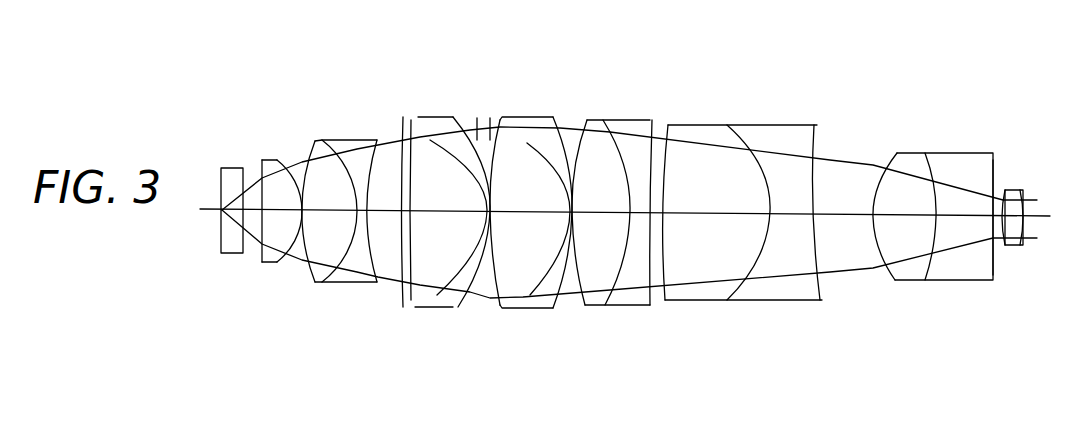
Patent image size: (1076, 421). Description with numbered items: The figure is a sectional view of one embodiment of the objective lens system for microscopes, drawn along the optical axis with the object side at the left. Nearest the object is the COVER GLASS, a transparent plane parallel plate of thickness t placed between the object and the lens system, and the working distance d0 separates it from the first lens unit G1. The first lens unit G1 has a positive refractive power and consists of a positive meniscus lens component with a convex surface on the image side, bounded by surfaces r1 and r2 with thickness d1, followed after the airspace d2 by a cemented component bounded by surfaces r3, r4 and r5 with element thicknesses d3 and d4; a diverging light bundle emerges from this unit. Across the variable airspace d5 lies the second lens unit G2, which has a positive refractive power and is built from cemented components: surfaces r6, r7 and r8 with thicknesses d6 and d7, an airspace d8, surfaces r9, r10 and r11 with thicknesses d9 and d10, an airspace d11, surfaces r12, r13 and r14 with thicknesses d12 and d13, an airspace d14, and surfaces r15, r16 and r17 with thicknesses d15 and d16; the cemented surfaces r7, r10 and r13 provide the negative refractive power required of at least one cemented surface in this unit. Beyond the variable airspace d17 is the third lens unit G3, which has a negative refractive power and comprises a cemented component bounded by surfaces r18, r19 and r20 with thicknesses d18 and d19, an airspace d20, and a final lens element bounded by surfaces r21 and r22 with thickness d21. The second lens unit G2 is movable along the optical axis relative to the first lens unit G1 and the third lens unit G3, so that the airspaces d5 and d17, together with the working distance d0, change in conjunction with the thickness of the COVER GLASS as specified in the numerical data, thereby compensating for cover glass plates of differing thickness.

The first lens unit G1 is at (310, 141).
The second lens unit G2 is at (614, 155).
The third lens unit G3 is at (962, 142).
The cover glass plate COVER GLASS is at (222, 237).
The radius of curvature of first surface r1 is at (262, 160).
The radius of curvature of second surface r2 is at (279, 160).
The radius of curvature of third surface r3 is at (313, 141).
The radius of curvature of fourth surface r4 is at (334, 140).
The radius of curvature of fifth surface r5 is at (380, 163).
The radius of curvature of sixth surface r6 is at (401, 135).
The radius of curvature of seventh surface r7 is at (434, 117).
The radius of curvature of eighth surface r8 is at (478, 118).
The radius of curvature of ninth surface r9 is at (490, 118).
The radius of curvature of tenth surface r10 is at (525, 118).
The radius of curvature of eleventh surface r11 is at (559, 118).
The radius of curvature of twelfth surface r12 is at (582, 118).
The radius of curvature of thirteenth surface r13 is at (620, 118).
The radius of curvature of fourteenth surface r14 is at (643, 118).
The radius of curvature of fifteenth surface r15 is at (663, 118).
The radius of curvature of sixteenth surface r16 is at (752, 125).
The radius of curvature of seventeenth surface r17 is at (812, 174).
The radius of curvature of eighteenth surface r18 is at (885, 150).
The radius of curvature of nineteenth surface r19 is at (930, 153).
The radius of curvature of twentieth surface r20 is at (985, 165).
The radius of curvature of twenty-first surface r21 is at (1006, 190).
The radius of curvature of twenty-second surface r22 is at (1038, 154).
The working distance d0 is at (249, 255).
The thickness of first lens element d1 is at (270, 262).
The airspace between first and second lens elements d2 is at (298, 262).
The thickness of second lens element d3 is at (338, 262).
The thickness of third lens element d4 is at (355, 285).
The variable airspace between first and second lens units d5 is at (392, 285).
The thickness of fourth lens element d6 is at (434, 308).
The thickness of fifth lens element d7 is at (462, 270).
The airspace between fifth and sixth lens elements d8 is at (490, 275).
The thickness of sixth lens element d9 is at (517, 275).
The thickness of seventh lens element d10 is at (538, 275).
The airspace between seventh and eighth lens elements d11 is at (566, 275).
The thickness of eighth lens element d12 is at (596, 275).
The thickness of ninth lens element d13 is at (634, 270).
The airspace between ninth and tenth lens elements d14 is at (655, 218).
The thickness of tenth lens element d15 is at (707, 217).
The thickness of eleventh lens element d16 is at (775, 230).
The variable airspace between second and third lens units d17 is at (845, 225).
The thickness of twelfth lens element d18 is at (905, 235).
The thickness of thirteenth lens element d19 is at (955, 235).
The airspace between thirteenth and fourteenth lens elements d20 is at (1001, 230).
The thickness of fourteenth lens element d21 is at (1024, 230).